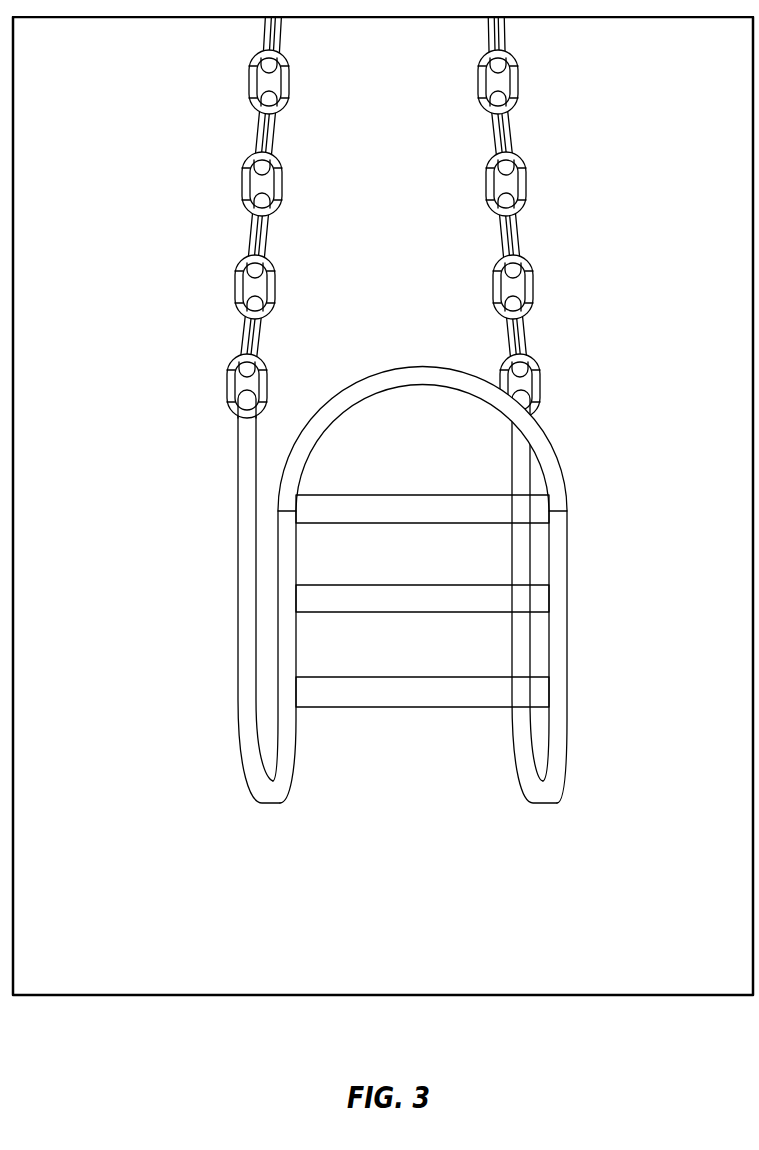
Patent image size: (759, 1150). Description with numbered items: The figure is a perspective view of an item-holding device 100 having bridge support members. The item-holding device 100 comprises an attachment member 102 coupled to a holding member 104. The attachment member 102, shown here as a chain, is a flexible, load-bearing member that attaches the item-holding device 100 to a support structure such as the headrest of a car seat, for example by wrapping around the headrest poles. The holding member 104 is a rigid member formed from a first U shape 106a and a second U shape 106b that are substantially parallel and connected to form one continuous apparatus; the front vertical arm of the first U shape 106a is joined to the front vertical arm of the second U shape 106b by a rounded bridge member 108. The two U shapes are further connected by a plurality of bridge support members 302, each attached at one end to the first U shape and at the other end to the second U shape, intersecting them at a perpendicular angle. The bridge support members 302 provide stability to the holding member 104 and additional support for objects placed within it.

The item-holding device 100 is at (379, 446).
The attachment member 102 is at (241, 170).
The holding member 104 is at (568, 527).
The first U shape 106a is at (560, 792).
The second U shape 106b is at (257, 790).
The bridge member 108 is at (413, 366).
The bridge support member 302 is at (315, 523).